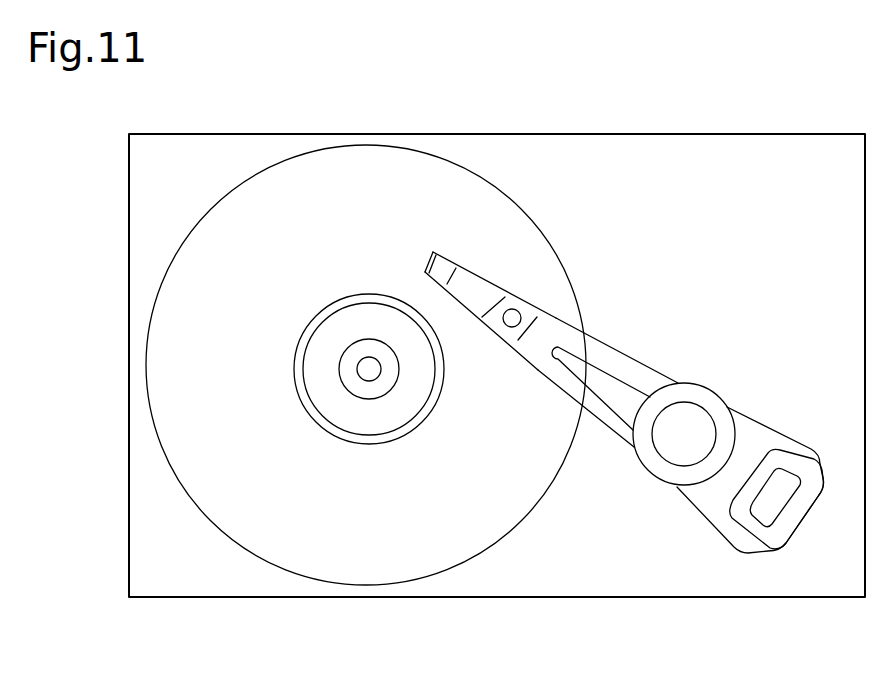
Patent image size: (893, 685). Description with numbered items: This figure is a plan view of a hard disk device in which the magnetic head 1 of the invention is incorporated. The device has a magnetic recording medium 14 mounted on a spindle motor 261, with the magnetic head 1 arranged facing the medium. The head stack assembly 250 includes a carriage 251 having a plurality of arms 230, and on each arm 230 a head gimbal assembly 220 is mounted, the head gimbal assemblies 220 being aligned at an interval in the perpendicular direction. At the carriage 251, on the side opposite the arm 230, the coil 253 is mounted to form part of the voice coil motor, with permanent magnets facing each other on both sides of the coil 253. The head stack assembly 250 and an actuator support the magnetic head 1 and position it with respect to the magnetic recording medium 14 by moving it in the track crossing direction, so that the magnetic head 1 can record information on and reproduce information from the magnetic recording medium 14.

The magnetic head 1 is at (447, 257).
The magnetic recording medium 14 is at (288, 572).
The head gimbal assembly 220 is at (482, 318).
The arm 230 is at (612, 425).
The head stack assembly 250 is at (690, 508).
The carriage 251 is at (696, 384).
The coil 253 is at (808, 517).
The spindle motor 261 is at (369, 373).